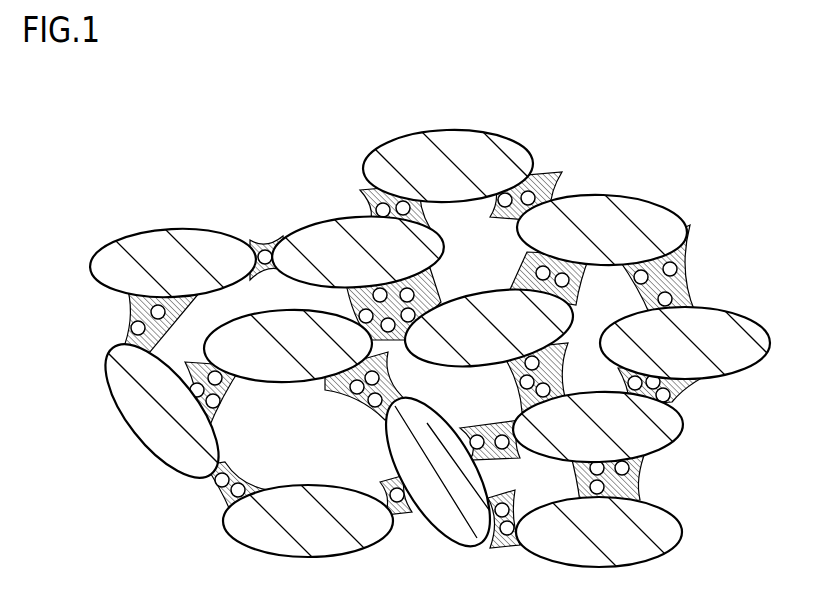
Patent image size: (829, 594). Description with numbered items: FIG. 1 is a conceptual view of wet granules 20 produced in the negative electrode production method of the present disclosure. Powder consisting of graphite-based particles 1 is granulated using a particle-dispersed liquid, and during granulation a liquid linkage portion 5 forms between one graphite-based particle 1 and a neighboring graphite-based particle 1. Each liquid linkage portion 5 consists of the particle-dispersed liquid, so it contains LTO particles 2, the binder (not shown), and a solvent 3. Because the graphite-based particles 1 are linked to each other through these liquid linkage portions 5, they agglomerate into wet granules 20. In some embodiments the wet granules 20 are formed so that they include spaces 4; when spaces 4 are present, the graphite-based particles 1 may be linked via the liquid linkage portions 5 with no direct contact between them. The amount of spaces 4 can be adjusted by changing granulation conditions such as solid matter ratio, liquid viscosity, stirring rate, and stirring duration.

The wet granule 20 is at (182, 110).
The graphite-based particle 1 is at (676, 422).
The LTO particle 2 is at (625, 472).
The solvent 3 is at (638, 493).
The space 4 is at (603, 307).
The liquid linkage portion 5 is at (659, 480).